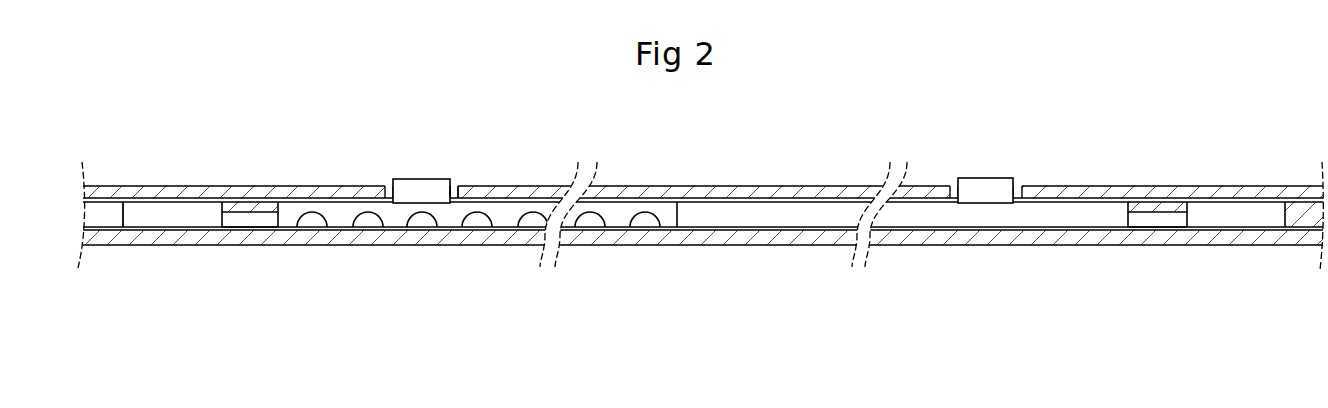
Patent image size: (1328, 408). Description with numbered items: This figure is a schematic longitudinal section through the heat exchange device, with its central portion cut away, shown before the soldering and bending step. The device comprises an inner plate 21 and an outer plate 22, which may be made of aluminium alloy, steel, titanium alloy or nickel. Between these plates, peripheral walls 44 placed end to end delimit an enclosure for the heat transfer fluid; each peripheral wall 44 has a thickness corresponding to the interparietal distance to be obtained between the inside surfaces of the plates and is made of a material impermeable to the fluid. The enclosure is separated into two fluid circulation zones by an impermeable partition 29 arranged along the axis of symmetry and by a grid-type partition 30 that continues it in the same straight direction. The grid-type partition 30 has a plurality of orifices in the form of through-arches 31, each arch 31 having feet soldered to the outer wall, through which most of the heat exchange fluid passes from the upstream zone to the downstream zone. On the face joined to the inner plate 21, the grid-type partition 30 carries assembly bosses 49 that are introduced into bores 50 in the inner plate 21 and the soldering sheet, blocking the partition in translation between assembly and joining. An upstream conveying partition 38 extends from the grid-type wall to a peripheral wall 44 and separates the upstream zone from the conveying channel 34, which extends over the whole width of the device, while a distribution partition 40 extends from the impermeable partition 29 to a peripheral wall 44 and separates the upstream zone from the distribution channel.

The inner plate 21 is at (800, 192).
The outer plate 22 is at (305, 238).
The partition 29 is at (703, 217).
The grid-type partition 30 is at (618, 211).
The through-arch 31 is at (240, 218).
The conveying channel 34 is at (165, 213).
The upstream conveying partition 38 is at (248, 208).
The distribution partition 40 is at (1153, 212).
The peripheral wall 44 is at (1310, 210).
The assembly boss 49 is at (423, 190).
The bore 50 is at (452, 195).